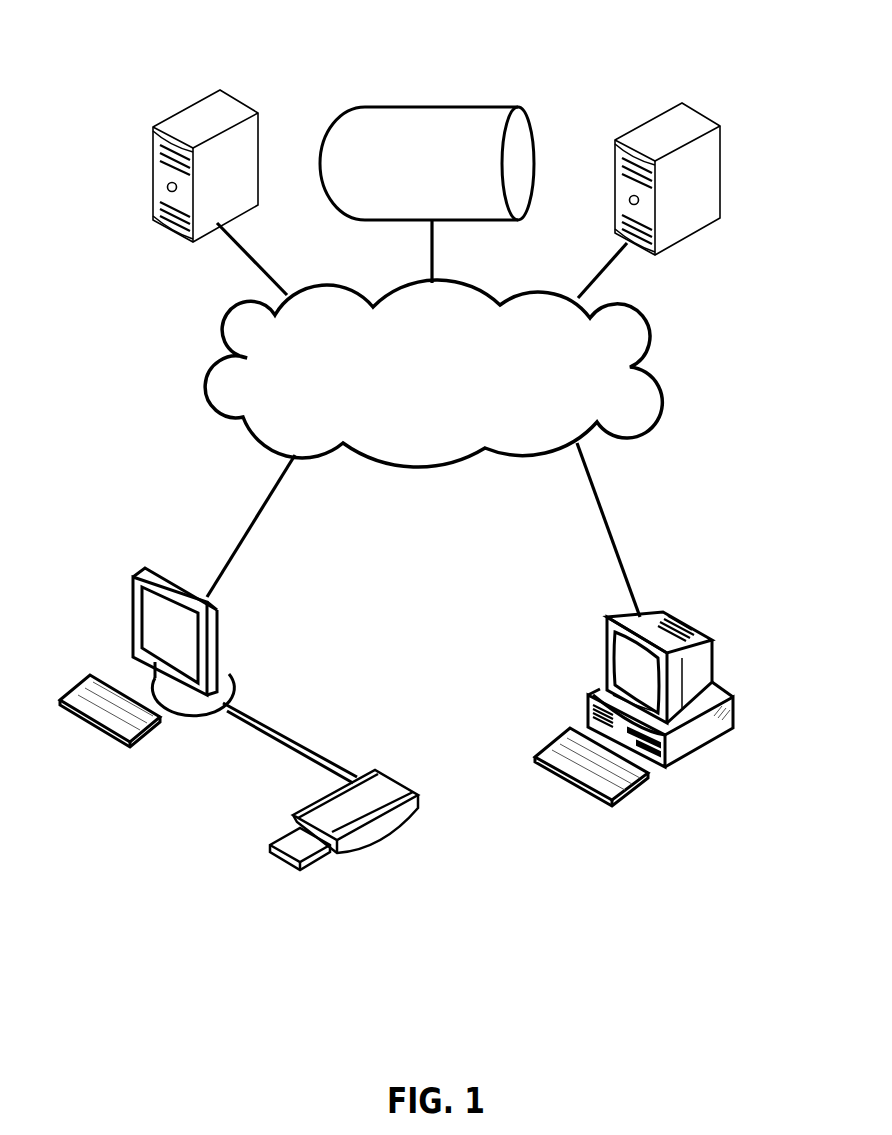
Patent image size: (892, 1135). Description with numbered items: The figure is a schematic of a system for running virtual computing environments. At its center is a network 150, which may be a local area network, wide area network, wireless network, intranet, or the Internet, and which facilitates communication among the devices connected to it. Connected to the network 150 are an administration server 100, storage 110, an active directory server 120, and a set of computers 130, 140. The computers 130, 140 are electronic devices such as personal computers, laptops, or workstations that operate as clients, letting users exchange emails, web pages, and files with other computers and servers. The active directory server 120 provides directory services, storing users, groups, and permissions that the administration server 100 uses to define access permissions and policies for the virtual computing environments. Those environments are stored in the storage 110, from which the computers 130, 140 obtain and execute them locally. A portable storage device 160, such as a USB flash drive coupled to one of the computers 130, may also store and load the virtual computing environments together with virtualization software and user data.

The administration server 100 is at (217, 163).
The storage 110 is at (427, 195).
The active directory server 120 is at (670, 155).
The computer 130 is at (177, 616).
The computer 140 is at (673, 624).
The network 150 is at (433, 373).
The portable storage device 160 is at (336, 833).